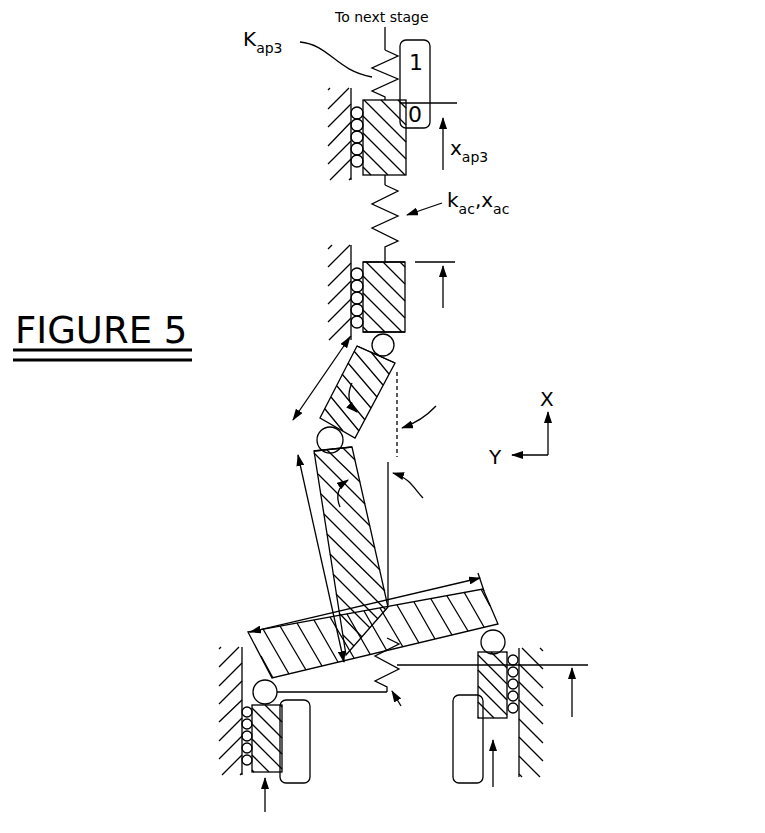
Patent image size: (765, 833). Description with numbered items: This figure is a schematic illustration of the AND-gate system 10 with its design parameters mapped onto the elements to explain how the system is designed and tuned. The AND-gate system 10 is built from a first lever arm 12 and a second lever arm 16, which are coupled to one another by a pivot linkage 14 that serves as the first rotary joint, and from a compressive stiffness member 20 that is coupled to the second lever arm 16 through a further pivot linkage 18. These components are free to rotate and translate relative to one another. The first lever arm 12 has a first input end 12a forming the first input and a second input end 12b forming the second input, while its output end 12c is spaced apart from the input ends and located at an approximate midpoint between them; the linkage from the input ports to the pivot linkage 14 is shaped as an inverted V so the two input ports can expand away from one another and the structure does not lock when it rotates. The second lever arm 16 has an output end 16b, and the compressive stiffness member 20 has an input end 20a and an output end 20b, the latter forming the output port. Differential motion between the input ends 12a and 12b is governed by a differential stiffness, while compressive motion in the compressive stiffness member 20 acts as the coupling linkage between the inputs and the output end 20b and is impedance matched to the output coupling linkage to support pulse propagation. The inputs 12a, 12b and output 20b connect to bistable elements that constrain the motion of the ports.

The AND-gate system 10 is at (268, 254).
The first lever arm 12 is at (355, 525).
The first input end 12a is at (246, 661).
The second input end 12b is at (490, 625).
The output end 12c is at (320, 466).
The pivot linkage 14 is at (318, 440).
The second lever arm 16 is at (376, 395).
The output end 16b is at (397, 368).
The pivot linkage 18 is at (396, 344).
The compressive stiffness member 20 is at (380, 296).
The input end 20a is at (398, 322).
The output end 20b is at (373, 262).